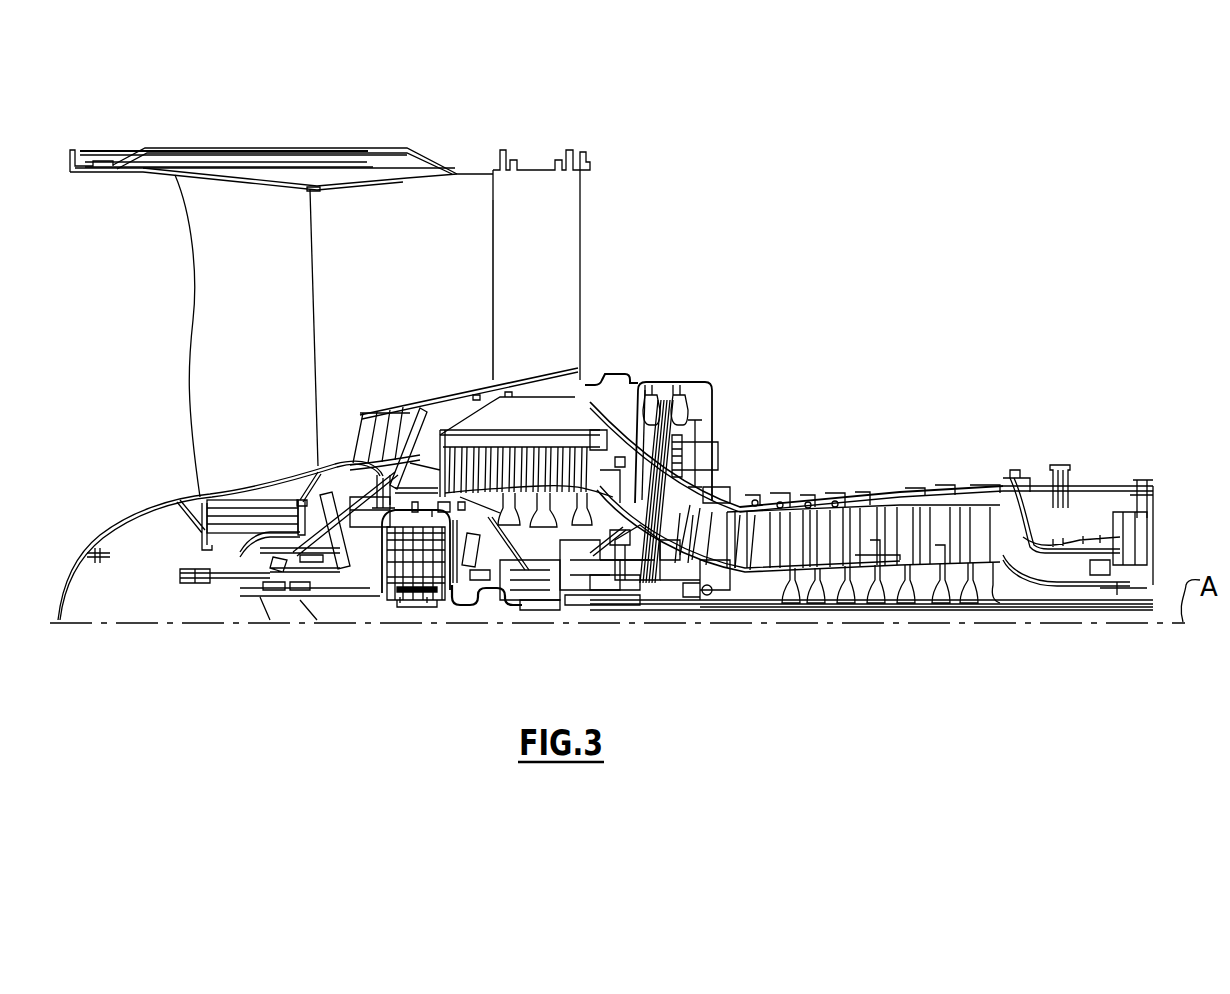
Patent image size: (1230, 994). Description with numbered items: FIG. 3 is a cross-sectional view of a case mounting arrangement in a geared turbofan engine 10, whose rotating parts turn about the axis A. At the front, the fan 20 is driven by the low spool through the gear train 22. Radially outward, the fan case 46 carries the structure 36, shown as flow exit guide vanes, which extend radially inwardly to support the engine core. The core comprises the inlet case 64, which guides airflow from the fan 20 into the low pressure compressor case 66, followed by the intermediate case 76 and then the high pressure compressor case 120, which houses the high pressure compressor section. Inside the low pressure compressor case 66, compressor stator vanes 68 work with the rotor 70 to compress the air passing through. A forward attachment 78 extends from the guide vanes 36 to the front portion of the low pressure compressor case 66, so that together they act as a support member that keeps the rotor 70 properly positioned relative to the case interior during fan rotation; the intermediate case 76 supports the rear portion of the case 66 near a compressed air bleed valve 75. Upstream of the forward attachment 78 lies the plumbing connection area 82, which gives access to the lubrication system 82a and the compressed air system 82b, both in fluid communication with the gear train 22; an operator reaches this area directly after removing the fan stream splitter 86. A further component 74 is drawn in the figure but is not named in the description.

The geared turbofan engine 10 is at (822, 161).
The fan 20 is at (200, 330).
The gear train 22 is at (420, 604).
The structure (flow exit guide vanes) 36 is at (560, 283).
The fan case 46 is at (471, 172).
The inlet case 64 is at (406, 438).
The low pressure compressor case 66 is at (520, 430).
The compressor stator vanes 68 is at (512, 503).
The rotor 70 is at (549, 500).
The combustor 74 is at (600, 425).
The compressed air bleed valve 75 is at (633, 460).
The intermediate case 76 is at (721, 488).
The forward attachment 78 is at (478, 390).
The plumbing connection area 82 is at (425, 402).
The lubrication system 82a is at (380, 432).
The compressed air system 82b is at (395, 508).
The fan stream splitter 86 is at (467, 390).
The high pressure compressor case 120 is at (880, 487).